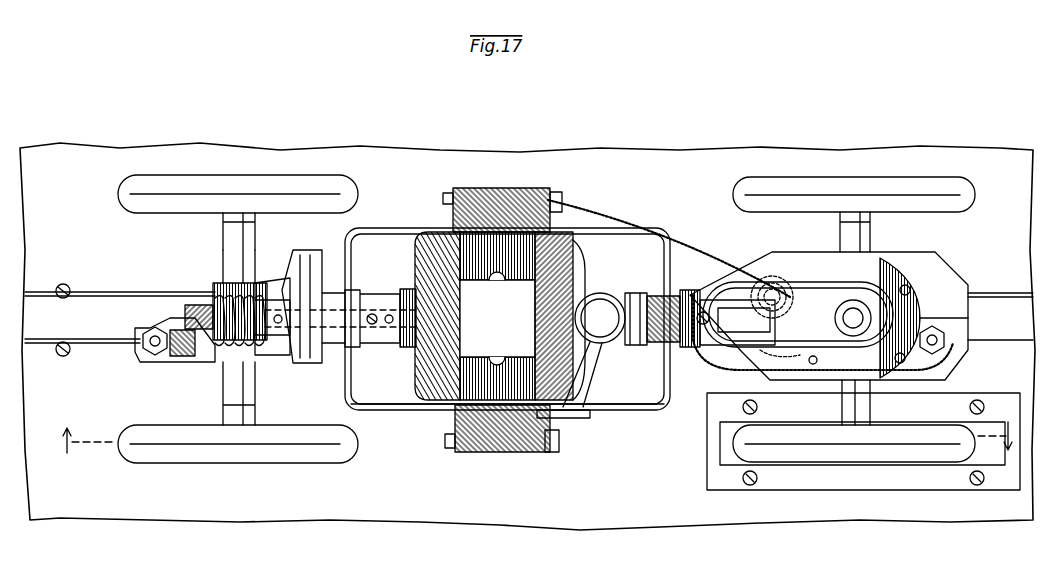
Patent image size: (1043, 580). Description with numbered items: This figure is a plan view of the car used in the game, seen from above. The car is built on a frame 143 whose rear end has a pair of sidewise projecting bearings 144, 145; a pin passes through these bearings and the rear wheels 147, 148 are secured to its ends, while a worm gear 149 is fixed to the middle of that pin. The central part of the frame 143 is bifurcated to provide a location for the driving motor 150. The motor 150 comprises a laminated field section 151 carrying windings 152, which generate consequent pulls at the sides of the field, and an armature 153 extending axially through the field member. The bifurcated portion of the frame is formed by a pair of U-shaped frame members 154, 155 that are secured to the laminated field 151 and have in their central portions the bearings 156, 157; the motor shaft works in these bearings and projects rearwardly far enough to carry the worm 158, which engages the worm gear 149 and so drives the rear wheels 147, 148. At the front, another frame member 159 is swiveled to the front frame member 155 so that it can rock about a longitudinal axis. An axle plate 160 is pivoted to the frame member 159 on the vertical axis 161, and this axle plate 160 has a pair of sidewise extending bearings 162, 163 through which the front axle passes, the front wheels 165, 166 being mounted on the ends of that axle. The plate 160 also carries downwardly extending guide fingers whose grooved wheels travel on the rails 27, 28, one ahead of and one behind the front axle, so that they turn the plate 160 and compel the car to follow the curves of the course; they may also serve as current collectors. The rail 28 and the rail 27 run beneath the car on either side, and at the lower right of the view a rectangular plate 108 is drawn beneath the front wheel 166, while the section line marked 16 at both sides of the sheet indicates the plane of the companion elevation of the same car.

The section line 16- 16 is at (536, 437).
The rail 27 is at (95, 342).
The rail 28 is at (103, 291).
The mounting plate 108 is at (730, 456).
The frame 143 is at (389, 225).
The bearing 144 is at (236, 236).
The bearing 145 is at (232, 390).
The rear wheel 147 is at (225, 188).
The rear wheel 148 is at (275, 456).
The worm gear 149 is at (212, 313).
The driving motor 150 is at (449, 421).
The laminated field section 151 is at (525, 196).
The windings 152 is at (432, 246).
The armature 153 is at (577, 396).
The U-shaped frame member 154 is at (411, 406).
The front frame member 155 is at (645, 402).
The bearing 156 is at (330, 347).
The bearing 157 is at (673, 300).
The worm 158 is at (216, 291).
The frame member 159 is at (808, 308).
The axle plate 160 is at (867, 263).
The vertical axis 161 is at (855, 316).
The bearing 162 is at (860, 240).
The bearing 163 is at (846, 405).
The front wheel 165 is at (880, 196).
The front wheel 166 is at (896, 446).